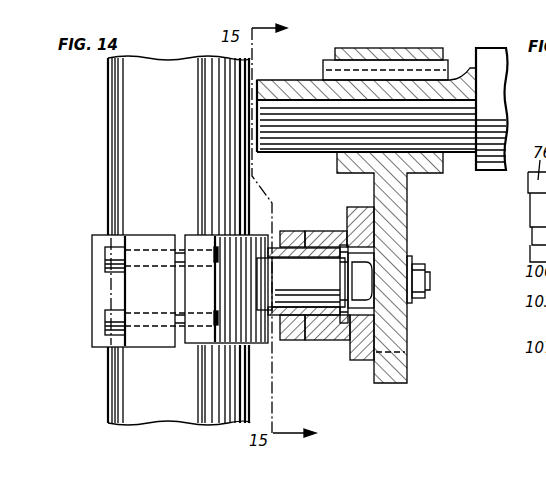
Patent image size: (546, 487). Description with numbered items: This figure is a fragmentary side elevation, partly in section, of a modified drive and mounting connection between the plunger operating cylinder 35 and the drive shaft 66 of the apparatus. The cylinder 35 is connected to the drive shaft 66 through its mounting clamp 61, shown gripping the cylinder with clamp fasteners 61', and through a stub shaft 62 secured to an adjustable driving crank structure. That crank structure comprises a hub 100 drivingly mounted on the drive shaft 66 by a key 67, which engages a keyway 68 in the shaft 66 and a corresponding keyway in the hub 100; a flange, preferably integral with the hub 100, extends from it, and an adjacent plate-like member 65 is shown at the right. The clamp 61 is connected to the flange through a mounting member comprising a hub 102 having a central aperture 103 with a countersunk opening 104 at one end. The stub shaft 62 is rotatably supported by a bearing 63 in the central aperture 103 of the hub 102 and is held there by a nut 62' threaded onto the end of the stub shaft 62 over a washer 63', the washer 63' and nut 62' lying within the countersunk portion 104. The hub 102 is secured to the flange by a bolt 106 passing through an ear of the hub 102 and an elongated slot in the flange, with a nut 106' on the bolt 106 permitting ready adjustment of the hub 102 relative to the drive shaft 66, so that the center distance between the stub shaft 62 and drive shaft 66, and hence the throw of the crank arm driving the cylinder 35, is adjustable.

The plunger operating cylinder 35 is at (118, 153).
The mounting clamp 61 is at (180, 272).
The clamp bolts 61' is at (87, 291).
The stub shaft 62 is at (301, 312).
The nut 62' is at (397, 285).
The bearing 63 is at (304, 305).
The washer 63' is at (401, 305).
The plate 65 is at (494, 97).
The drive shaft 66 is at (460, 134).
The key 67 is at (330, 66).
The keyway 68 is at (457, 68).
The hub 100 is at (345, 160).
The hub 102 is at (285, 231).
The central aperture 103 is at (307, 242).
The countersunk opening 104 is at (347, 232).
The bolt 106 is at (442, 280).
The nut 106' is at (442, 269).